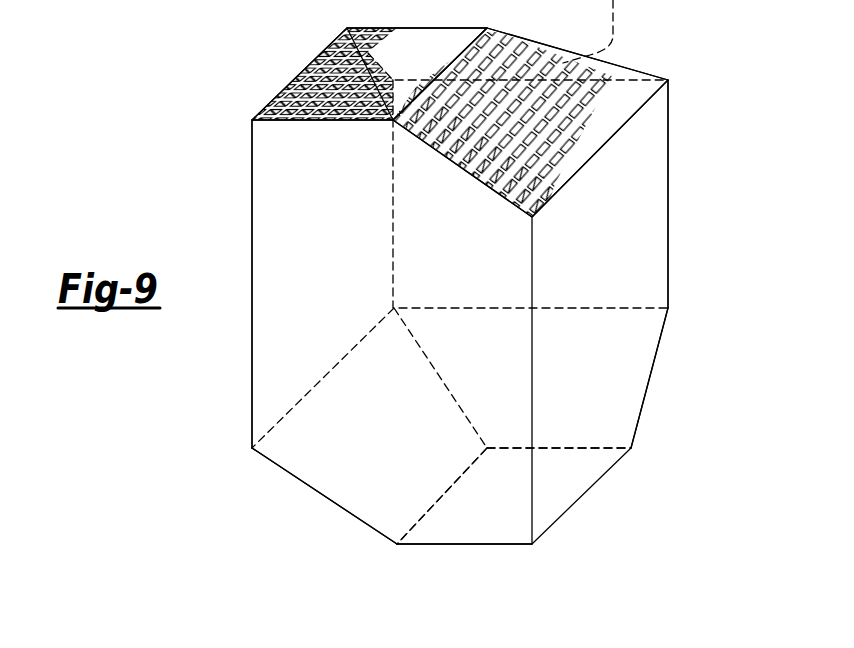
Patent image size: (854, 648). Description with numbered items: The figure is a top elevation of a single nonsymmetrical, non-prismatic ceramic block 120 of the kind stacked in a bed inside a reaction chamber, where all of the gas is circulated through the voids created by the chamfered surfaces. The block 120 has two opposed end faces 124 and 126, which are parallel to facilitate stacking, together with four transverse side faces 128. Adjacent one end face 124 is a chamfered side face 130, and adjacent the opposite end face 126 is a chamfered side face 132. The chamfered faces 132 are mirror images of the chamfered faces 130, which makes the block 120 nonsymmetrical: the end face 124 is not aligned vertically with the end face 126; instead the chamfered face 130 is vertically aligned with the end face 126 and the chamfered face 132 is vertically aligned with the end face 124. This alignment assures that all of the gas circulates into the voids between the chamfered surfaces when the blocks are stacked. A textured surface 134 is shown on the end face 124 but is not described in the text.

The ceramic block 120 is at (686, 189).
The end face 124 is at (309, 66).
The end face 126 is at (489, 525).
The transverse side face 128 is at (269, 227).
The chamfered side face 130 is at (620, 103).
The chamfered side face 132 is at (628, 388).
The textured surface 134 is at (272, 100).